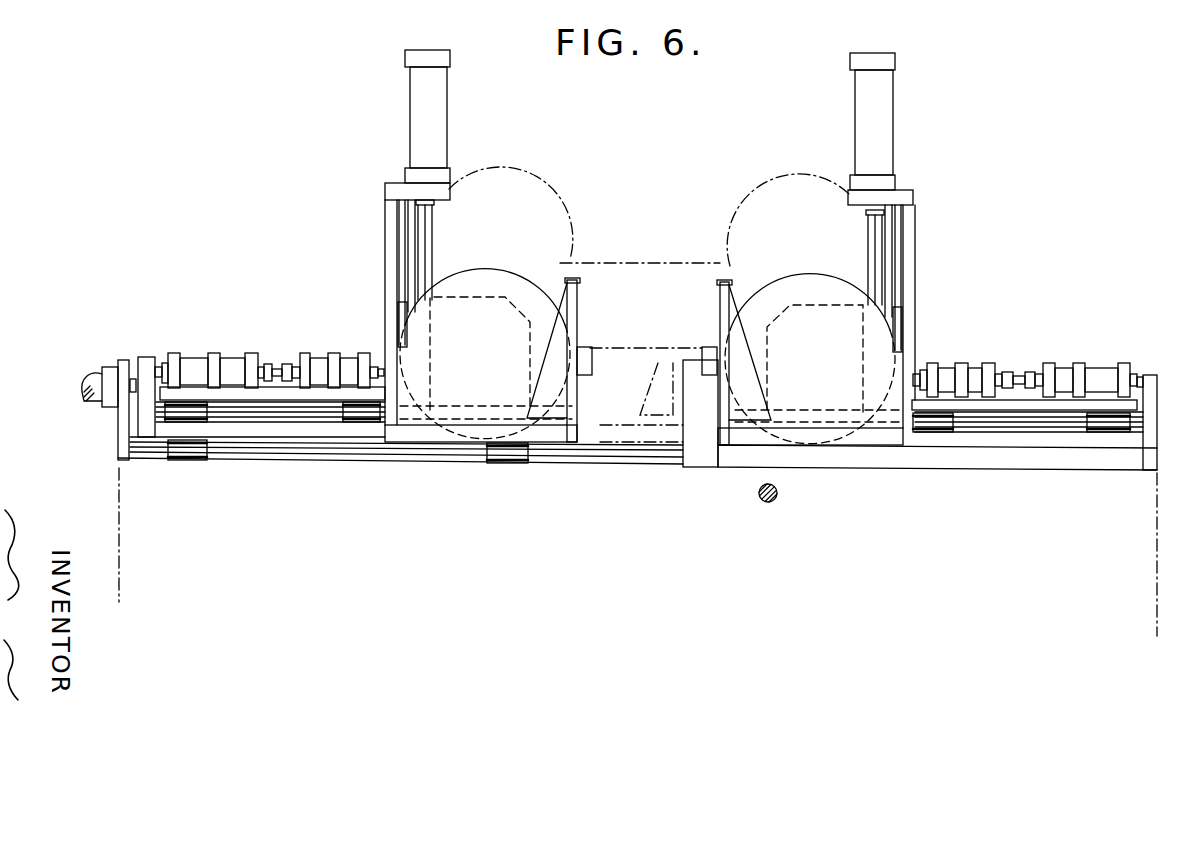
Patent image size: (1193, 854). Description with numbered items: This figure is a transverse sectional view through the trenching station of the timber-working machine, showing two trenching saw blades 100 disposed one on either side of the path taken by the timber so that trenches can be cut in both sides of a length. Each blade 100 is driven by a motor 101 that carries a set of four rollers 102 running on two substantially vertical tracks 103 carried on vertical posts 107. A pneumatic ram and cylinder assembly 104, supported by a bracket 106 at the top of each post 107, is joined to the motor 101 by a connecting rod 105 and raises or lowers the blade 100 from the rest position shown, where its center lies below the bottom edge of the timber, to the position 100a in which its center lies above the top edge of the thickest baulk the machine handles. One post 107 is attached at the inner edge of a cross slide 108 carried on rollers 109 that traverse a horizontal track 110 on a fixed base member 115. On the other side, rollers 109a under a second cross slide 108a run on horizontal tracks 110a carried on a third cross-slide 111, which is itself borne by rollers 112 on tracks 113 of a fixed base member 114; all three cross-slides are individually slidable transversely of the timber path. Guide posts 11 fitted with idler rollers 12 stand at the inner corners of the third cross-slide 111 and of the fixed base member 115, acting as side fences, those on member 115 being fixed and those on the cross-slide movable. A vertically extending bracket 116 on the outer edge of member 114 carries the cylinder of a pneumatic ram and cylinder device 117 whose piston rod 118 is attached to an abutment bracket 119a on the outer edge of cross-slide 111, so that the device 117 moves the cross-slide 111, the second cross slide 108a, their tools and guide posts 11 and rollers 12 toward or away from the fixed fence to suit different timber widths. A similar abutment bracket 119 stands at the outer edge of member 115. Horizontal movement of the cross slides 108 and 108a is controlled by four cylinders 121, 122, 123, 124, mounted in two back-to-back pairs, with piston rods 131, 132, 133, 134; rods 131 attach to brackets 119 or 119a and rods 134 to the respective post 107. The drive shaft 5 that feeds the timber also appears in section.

The drive shaft 5 is at (757, 503).
The guide post 11 is at (568, 279).
The idler roller 12 is at (707, 347).
The trenching saw blade 100 is at (440, 283).
The raised position of saw blade 100a is at (562, 192).
The motor 101 is at (840, 293).
The roller 102 is at (403, 322).
The vertical track 103 is at (408, 239).
The pneumatic ram and cylinder assembly 104 is at (438, 99).
The connecting rod 105 is at (427, 215).
The bracket 106 is at (423, 188).
The vertical post 107 is at (400, 213).
The cross slide 108 is at (1027, 408).
The second cross slide 108a is at (285, 398).
The roller 109 is at (931, 433).
The roller 109a is at (200, 420).
The horizontal track 110 is at (975, 423).
The horizontal track 110a is at (420, 425).
The third cross-slide 111 is at (330, 435).
The roller 112 is at (185, 453).
The track 113 is at (563, 453).
The fixed base member 114 is at (273, 458).
The fixed base member 115 is at (807, 458).
The vertically extending bracket 116 is at (93, 372).
The pneumatic ram and cylinder device 117 is at (121, 360).
The piston rod 118 is at (144, 357).
The abutment bracket 119 is at (1150, 385).
The abutment bracket 119a is at (205, 387).
The cylinder 121 is at (199, 362).
The cylinder 122 is at (262, 338).
The cylinder 123 is at (318, 363).
The cylinder 124 is at (348, 363).
The piston rod 131 is at (1143, 375).
The piston rod 132 is at (1028, 373).
The piston rod 133 is at (1010, 373).
The piston rod 134 is at (920, 374).